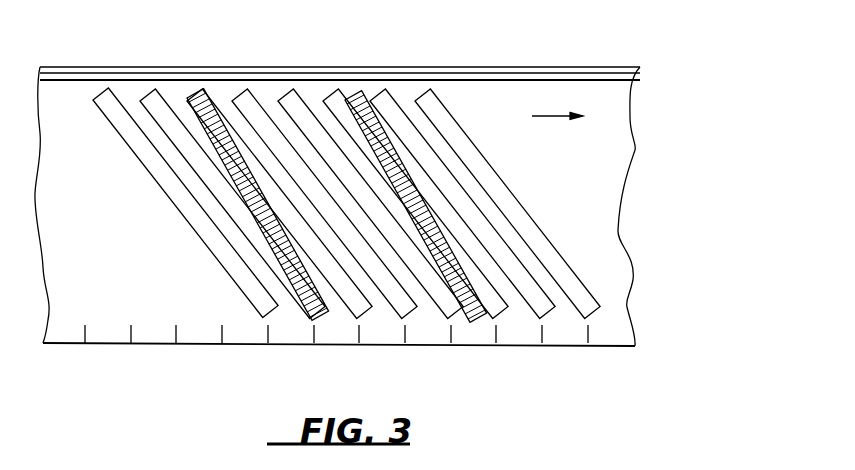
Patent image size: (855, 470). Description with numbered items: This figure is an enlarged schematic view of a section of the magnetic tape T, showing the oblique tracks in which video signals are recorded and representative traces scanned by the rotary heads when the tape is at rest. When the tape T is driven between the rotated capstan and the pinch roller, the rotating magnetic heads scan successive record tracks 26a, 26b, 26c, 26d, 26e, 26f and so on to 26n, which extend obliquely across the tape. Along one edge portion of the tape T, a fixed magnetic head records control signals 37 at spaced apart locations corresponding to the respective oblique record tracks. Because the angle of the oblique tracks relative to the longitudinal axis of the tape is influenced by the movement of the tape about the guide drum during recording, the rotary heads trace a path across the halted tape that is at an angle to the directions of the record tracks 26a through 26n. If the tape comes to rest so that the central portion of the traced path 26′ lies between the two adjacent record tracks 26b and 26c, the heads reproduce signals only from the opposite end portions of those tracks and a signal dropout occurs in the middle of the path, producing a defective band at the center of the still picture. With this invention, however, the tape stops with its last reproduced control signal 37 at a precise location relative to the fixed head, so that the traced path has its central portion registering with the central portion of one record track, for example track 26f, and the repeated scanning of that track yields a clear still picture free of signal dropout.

The magnetic tape T is at (612, 205).
The control signals 37 is at (177, 325).
The oblique record track 26a is at (212, 245).
The oblique record track 26b is at (158, 106).
The oblique record track 26c is at (352, 300).
The oblique record track 26d is at (398, 305).
The oblique record track 26e is at (450, 312).
The oblique record track 26f is at (497, 310).
The oblique record track 26n is at (593, 313).
The path traced by rotary heads 26′ is at (200, 94).